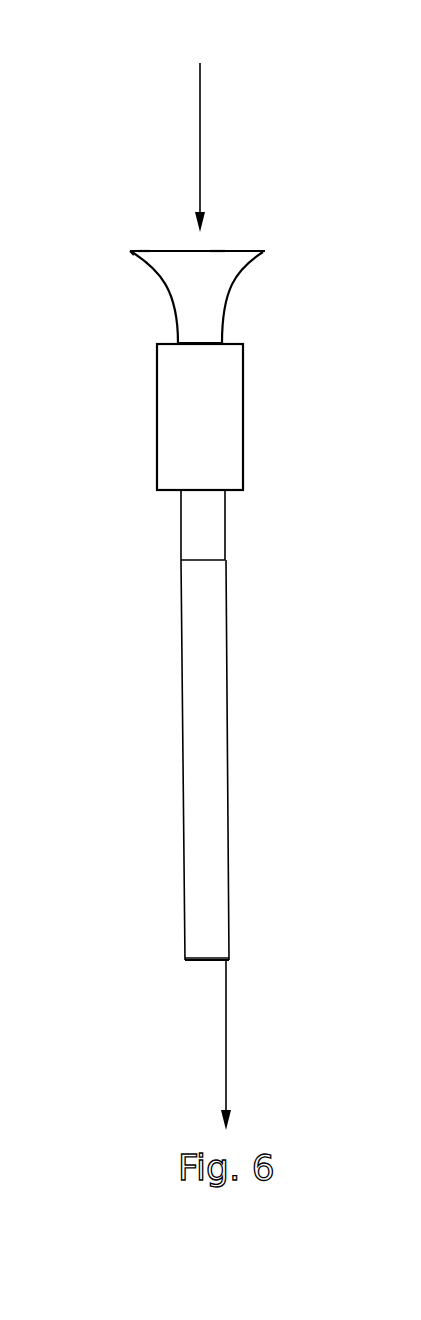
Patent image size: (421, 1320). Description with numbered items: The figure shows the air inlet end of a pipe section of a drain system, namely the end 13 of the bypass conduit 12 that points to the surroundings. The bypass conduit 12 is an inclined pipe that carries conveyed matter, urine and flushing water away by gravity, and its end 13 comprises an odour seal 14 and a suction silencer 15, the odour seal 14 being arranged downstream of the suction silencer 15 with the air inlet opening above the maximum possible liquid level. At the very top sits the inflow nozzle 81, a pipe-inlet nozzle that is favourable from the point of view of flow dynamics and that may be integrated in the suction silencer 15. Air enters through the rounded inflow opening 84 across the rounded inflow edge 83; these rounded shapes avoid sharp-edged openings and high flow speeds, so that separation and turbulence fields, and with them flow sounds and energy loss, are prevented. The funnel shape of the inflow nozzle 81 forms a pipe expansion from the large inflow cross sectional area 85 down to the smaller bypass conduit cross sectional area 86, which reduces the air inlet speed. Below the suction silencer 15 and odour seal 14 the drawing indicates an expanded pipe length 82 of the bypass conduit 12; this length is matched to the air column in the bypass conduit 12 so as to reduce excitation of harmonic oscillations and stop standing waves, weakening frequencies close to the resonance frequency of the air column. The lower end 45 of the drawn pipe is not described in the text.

The bypass conduit 12 is at (229, 765).
The end of the bypass conduit 13 is at (240, 249).
The odour seal 14 is at (226, 525).
The suction silencer 15 is at (244, 405).
The distal end 45 is at (228, 965).
The inflow nozzle 81 is at (231, 288).
The expanded pipe length 82 is at (227, 612).
The rounded inflow edge 83 is at (138, 253).
The rounded inflow opening 84 is at (143, 250).
The inflow cross sectional area 85 is at (221, 250).
The bypass conduit cross sectional area 86 is at (206, 343).